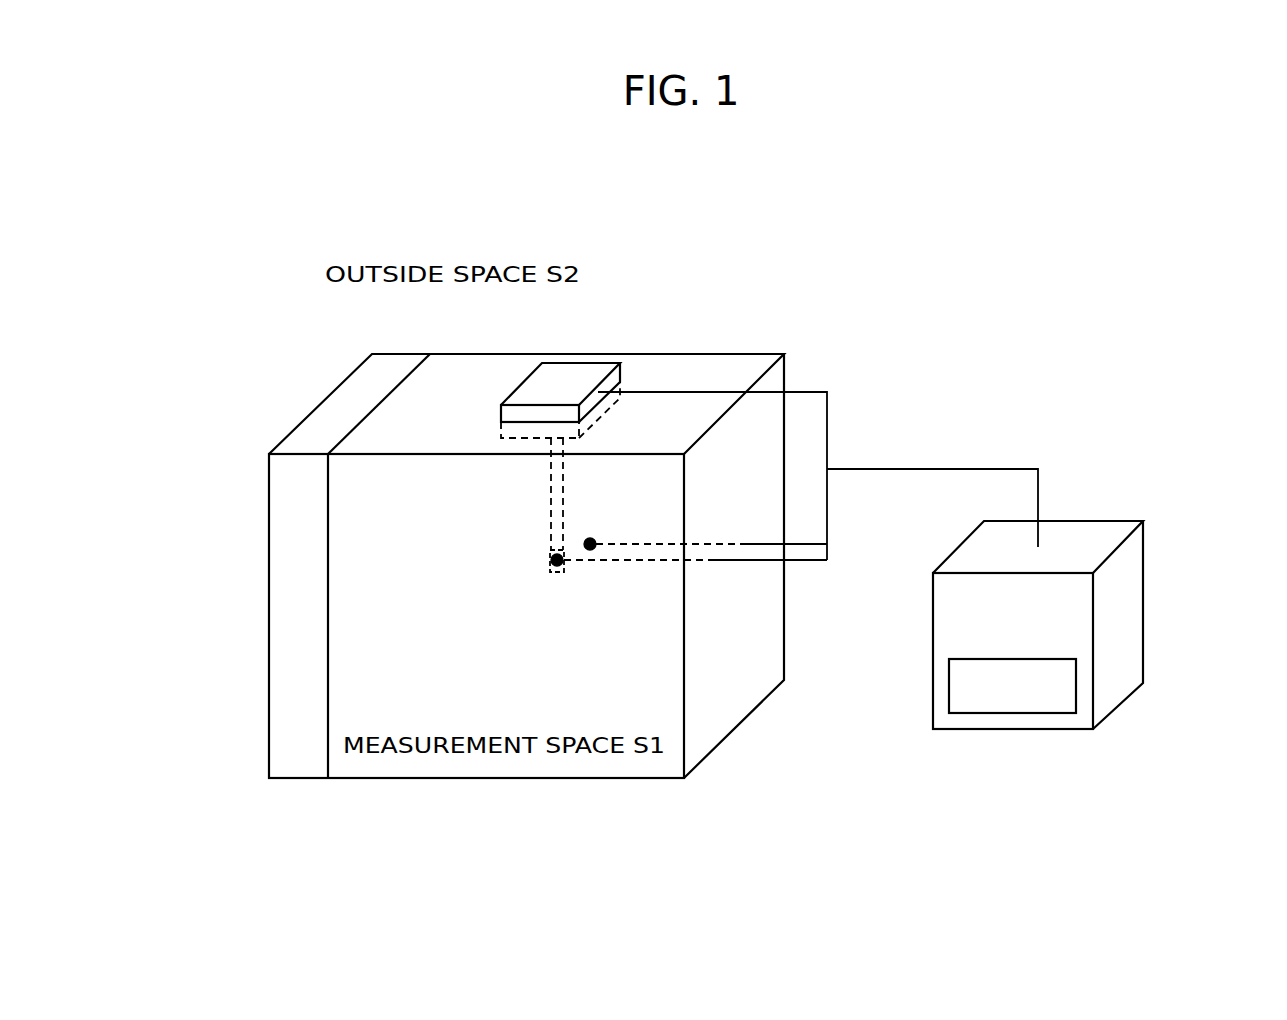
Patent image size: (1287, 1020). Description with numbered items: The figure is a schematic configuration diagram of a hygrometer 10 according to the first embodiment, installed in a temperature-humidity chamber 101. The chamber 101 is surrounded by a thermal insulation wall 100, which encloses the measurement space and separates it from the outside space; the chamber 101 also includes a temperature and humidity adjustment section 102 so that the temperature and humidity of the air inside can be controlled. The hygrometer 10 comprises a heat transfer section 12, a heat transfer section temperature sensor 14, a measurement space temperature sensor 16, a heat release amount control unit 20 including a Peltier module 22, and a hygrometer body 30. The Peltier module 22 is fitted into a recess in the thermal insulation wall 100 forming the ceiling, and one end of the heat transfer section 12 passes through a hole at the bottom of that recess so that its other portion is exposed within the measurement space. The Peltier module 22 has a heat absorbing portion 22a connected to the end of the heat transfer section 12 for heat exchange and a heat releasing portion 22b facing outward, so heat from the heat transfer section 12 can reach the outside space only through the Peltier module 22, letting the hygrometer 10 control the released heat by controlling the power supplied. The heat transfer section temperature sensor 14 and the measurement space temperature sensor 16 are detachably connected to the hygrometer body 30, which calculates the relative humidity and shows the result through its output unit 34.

The hygrometer 10 is at (1036, 376).
The heat transfer section 12 is at (551, 494).
The heat transfer section temperature sensor 14 is at (557, 575).
The measurement space temperature sensor 16 is at (592, 540).
The heat release amount control unit 20 is at (598, 357).
The Peltier module 22 is at (265, 300).
The heat absorbing portion 22a is at (500, 437).
The heat releasing portion 22b is at (545, 380).
The hygrometer body 30 is at (1160, 586).
The output unit 34 is at (1037, 713).
The thermal insulation wall 100 is at (378, 433).
The temperature-humidity chamber 101 is at (243, 501).
The temperature and humidity adjustment section 102 is at (269, 690).